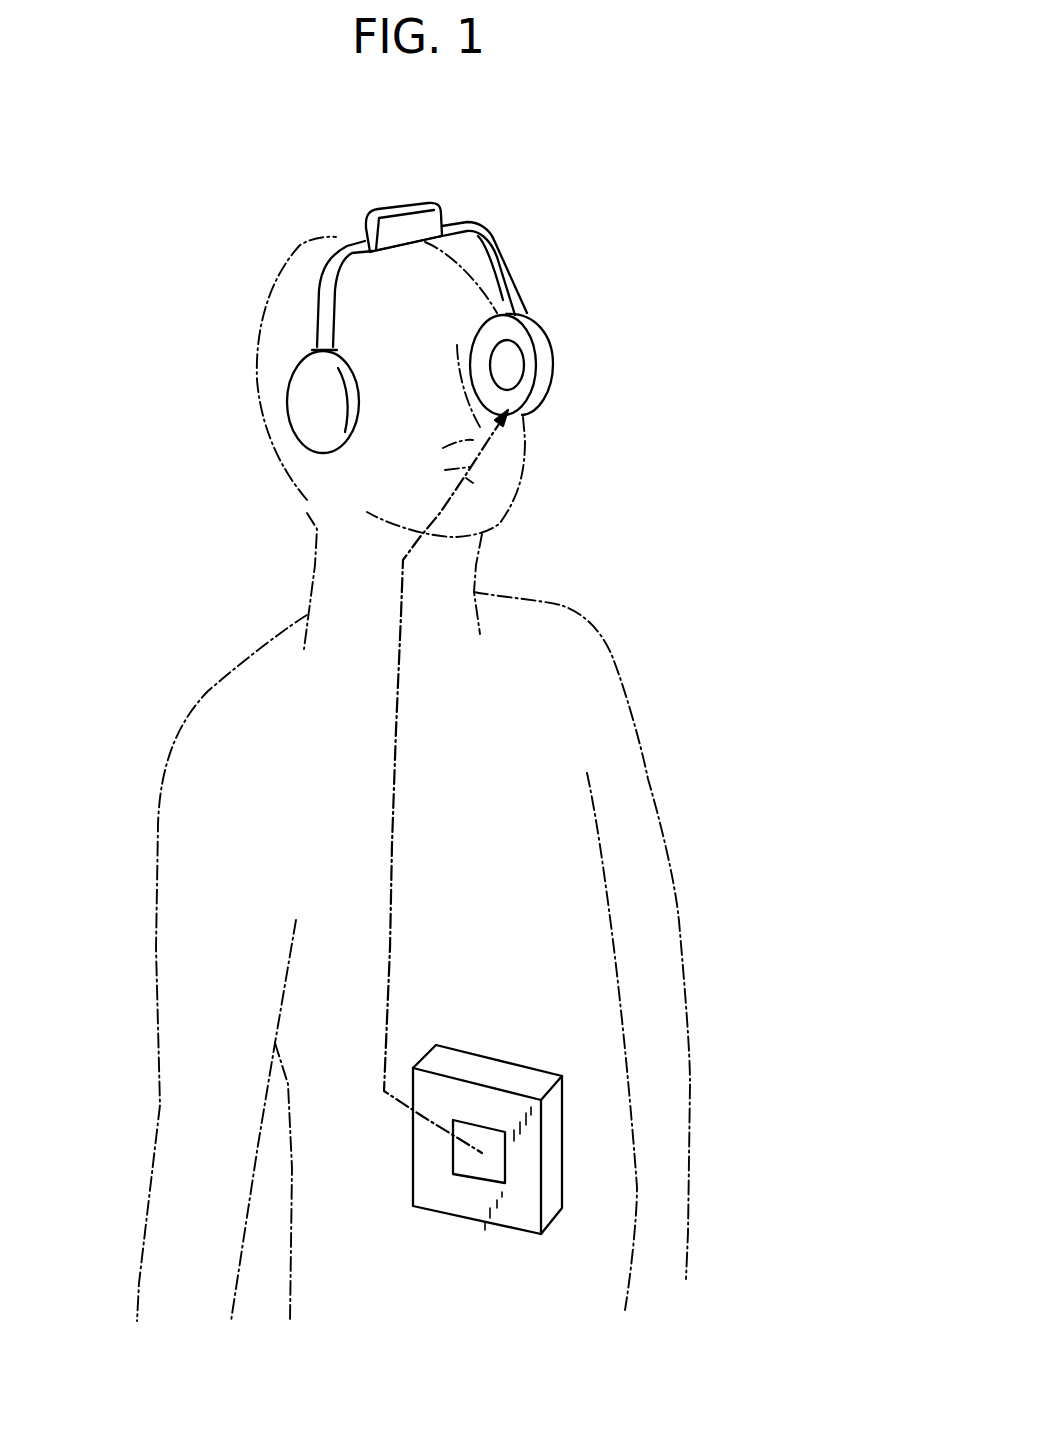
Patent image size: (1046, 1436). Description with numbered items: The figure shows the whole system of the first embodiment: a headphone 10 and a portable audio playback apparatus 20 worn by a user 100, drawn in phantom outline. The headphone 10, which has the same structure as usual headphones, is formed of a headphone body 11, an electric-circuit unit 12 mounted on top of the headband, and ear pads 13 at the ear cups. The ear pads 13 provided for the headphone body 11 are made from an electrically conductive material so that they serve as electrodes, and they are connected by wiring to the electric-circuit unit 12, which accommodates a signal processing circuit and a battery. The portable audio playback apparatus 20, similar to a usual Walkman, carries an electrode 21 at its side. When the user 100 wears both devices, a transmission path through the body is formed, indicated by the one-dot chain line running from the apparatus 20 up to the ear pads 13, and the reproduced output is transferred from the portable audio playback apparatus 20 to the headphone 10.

The headphone 10 is at (464, 299).
The headphone body 11 is at (553, 357).
The electric-circuit unit 12 is at (403, 233).
The ear pads 13 is at (527, 380).
The portable audio playback apparatus 20 is at (487, 1114).
The electrode 21 is at (484, 1164).
The user 100 is at (650, 782).